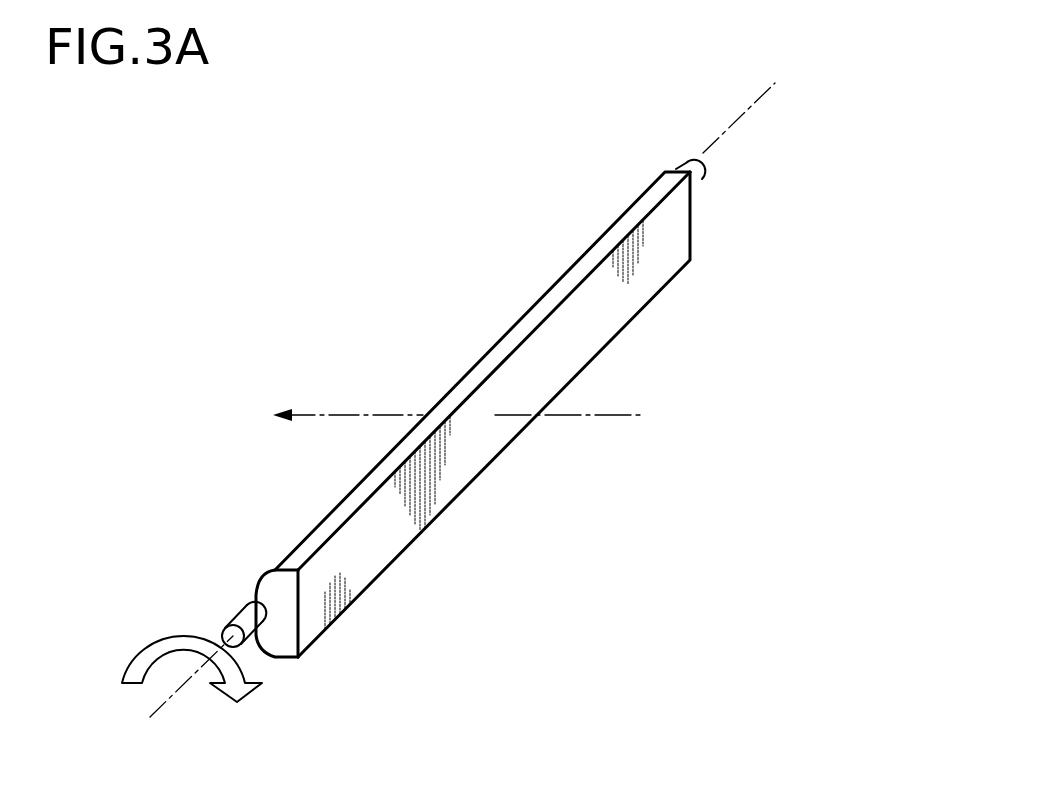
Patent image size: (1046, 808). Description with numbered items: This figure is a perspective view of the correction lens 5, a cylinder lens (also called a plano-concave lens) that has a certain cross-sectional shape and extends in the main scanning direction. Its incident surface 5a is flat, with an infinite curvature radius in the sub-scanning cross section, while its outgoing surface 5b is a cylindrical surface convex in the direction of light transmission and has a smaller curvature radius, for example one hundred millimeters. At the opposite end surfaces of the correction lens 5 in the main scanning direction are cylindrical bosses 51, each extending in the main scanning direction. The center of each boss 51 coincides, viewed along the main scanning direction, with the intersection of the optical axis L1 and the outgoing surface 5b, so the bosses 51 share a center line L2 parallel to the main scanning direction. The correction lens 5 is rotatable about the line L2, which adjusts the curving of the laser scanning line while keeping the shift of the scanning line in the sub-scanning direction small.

The correction lens 5 is at (503, 408).
The incident surface 5a is at (466, 459).
The outgoing surface 5b is at (478, 357).
The cylindrical boss 51 is at (247, 615).
The optical axis L1 is at (622, 418).
The line parallel to the main scanning direction L2 is at (750, 110).